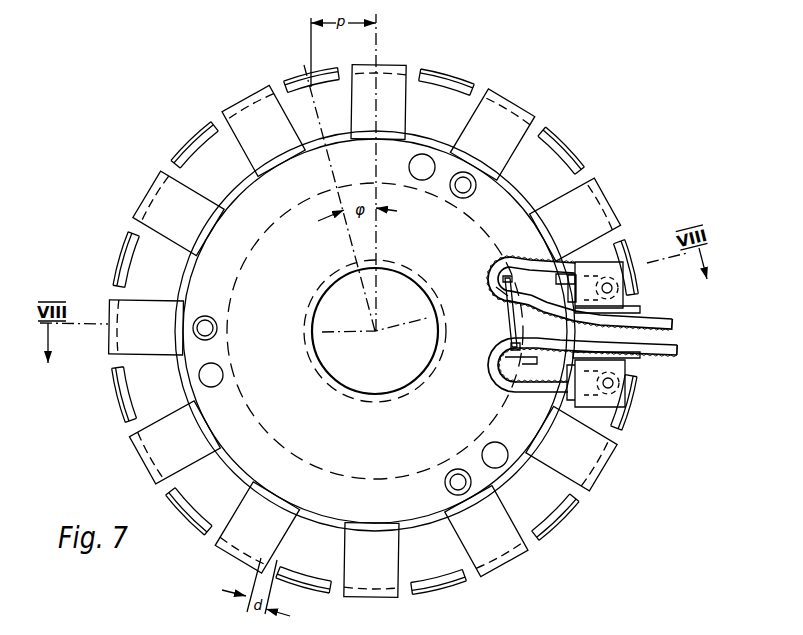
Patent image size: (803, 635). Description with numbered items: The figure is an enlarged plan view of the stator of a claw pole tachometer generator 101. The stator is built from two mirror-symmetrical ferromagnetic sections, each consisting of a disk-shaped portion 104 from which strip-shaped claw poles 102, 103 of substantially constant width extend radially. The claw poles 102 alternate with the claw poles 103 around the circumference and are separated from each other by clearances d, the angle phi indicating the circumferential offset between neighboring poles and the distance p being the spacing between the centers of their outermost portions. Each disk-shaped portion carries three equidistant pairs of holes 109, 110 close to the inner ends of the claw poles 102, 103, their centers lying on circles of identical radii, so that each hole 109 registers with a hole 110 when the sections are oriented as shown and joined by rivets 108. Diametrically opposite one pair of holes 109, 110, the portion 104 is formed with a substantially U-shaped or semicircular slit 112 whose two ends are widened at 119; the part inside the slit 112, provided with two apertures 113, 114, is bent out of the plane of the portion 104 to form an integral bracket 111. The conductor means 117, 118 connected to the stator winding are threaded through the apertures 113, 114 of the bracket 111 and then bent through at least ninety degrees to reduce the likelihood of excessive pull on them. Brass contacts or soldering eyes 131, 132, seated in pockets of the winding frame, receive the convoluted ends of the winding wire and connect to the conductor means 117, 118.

The claw pole tachometer generator 101 is at (182, 137).
The claw poles 102 is at (498, 115).
The claw poles 103 is at (557, 147).
The disk-shaped portion 104 is at (290, 237).
The rivets 108 is at (460, 190).
The holes 109 is at (423, 155).
The holes 110 is at (467, 193).
The bracket 111 is at (508, 316).
The slit 112 is at (547, 268).
The aperture 113 is at (496, 291).
The aperture 114 is at (502, 346).
The conductor means 117 is at (670, 352).
The conductor means 118 is at (655, 320).
The widened end portions of the slit 119 is at (513, 270).
The contact 131 is at (627, 262).
The contact 132 is at (637, 396).